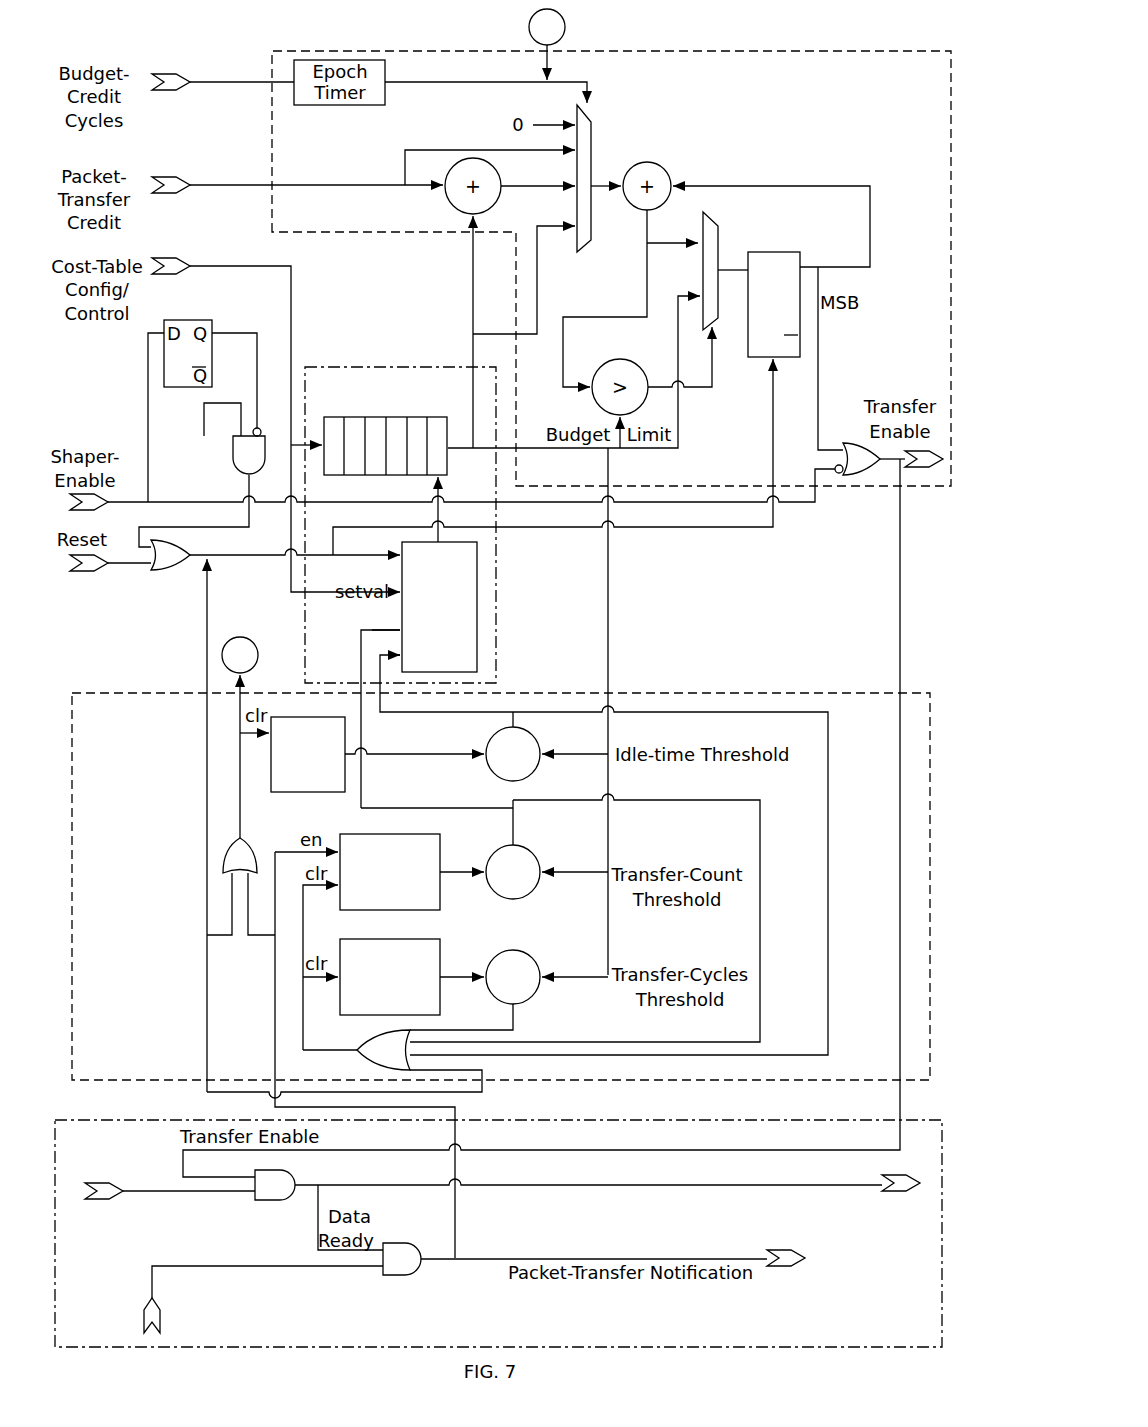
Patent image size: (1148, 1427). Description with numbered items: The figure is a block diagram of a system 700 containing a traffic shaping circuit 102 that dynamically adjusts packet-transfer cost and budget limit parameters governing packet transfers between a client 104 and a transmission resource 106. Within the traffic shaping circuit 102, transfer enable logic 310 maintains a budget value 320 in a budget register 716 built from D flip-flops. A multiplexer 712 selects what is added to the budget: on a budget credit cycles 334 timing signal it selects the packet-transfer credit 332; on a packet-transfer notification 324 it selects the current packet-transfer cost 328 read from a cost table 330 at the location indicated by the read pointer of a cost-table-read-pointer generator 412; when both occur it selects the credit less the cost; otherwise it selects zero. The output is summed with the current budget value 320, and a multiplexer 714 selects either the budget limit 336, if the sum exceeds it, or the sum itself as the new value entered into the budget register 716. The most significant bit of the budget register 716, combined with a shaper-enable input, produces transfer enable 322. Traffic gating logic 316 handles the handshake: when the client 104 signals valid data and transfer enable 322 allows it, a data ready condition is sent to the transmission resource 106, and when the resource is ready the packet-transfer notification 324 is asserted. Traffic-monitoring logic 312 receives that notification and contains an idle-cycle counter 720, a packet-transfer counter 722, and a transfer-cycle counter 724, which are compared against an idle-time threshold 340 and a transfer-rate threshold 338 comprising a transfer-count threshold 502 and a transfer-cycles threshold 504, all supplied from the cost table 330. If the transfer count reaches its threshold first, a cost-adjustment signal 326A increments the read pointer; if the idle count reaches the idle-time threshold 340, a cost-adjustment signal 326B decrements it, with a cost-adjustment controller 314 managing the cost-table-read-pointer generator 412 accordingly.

The system 700 is at (99, 35).
The traffic shaping circuit 102 is at (818, 19).
The transfer enable logic 310 is at (611, 268).
The packet-transfer notification 324 is at (562, 40).
The budget credit cycles 334 is at (400, 84).
The multiplexer 712 is at (594, 123).
The packet-transfer credit 332 is at (346, 185).
The multiplexer 714 is at (721, 229).
The packet-transfer cost 328 is at (472, 347).
The budget value 320 is at (776, 293).
The cost table 330 is at (373, 416).
The budget register 716 is at (752, 358).
The budget limit 336 is at (680, 447).
The transfer enable 322 is at (901, 562).
The cost-table-read-pointer generator 412 is at (439, 607).
The cost-adjustment controller 314 is at (498, 660).
The cost-adjustment signal 326B is at (400, 715).
The cost-adjustment signal 326A is at (404, 809).
The idle-time threshold 340 is at (580, 754).
The traffic-monitoring logic 312 is at (501, 886).
The idle-cycle counter 720 is at (286, 793).
The packet-transfer counter 722 is at (443, 892).
The transfer-count threshold 502 is at (588, 872).
The transfer-cycles threshold 504 is at (588, 977).
The transfer-cycle counter 724 is at (443, 987).
The transfer-rate threshold 338 is at (610, 850).
The traffic gating logic 316 is at (498, 1233).
The client 104 is at (451, 1225).
The transmission resource 106 is at (500, 1261).